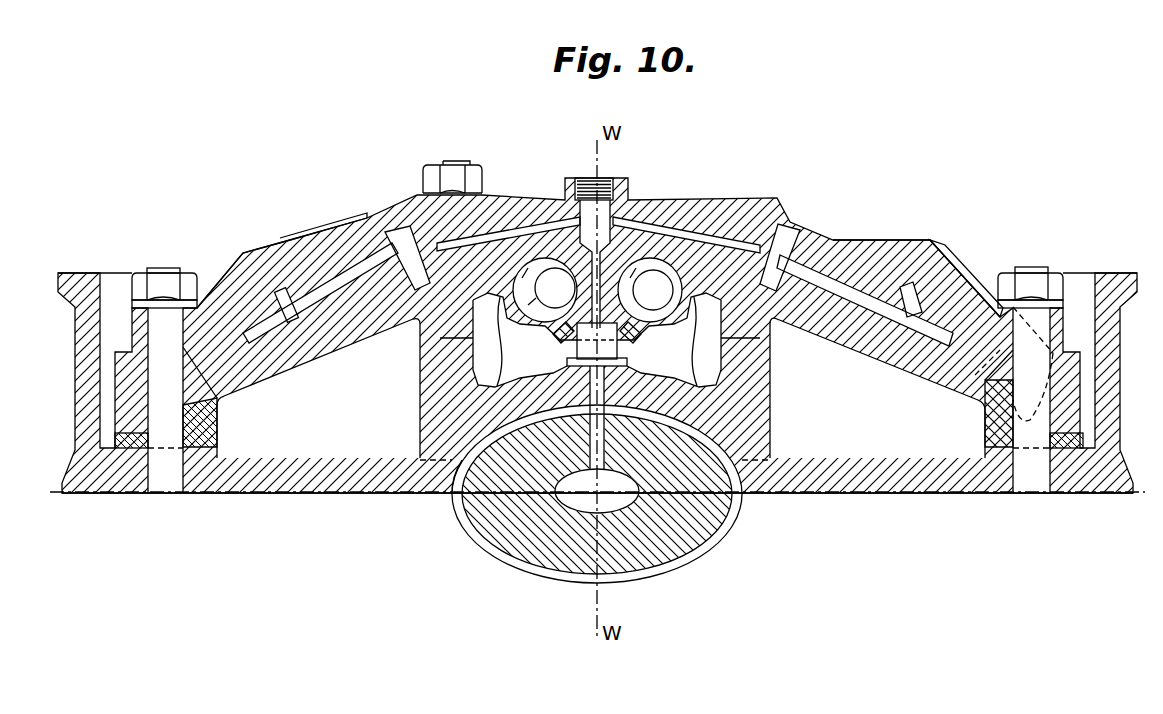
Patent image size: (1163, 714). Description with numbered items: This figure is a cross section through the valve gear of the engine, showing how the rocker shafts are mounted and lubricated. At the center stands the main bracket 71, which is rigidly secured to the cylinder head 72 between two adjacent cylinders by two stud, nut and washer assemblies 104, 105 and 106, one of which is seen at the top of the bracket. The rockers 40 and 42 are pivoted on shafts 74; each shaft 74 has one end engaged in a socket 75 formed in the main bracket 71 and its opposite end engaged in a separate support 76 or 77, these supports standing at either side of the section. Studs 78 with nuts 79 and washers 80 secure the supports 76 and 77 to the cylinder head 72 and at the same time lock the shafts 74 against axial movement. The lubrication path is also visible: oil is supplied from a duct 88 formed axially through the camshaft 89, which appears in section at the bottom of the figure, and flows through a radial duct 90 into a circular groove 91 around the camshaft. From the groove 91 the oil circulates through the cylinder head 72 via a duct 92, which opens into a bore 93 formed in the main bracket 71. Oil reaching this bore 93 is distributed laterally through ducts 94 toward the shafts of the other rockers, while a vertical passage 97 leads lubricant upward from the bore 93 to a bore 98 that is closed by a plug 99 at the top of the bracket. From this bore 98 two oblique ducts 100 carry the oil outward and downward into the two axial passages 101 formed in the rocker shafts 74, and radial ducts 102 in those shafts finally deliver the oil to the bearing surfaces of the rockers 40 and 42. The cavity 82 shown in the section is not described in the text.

The rocker 40 is at (325, 225).
The rocker 42 is at (977, 263).
The main bracket 71 is at (680, 200).
The cylinder head 72 is at (315, 478).
The shaft 74 is at (882, 287).
The socket 75 is at (818, 237).
The separate support 76 is at (998, 430).
The separate support 77 is at (140, 332).
The stud 78 is at (1040, 272).
The nut 79 is at (1040, 270).
The washer 80 is at (1055, 300).
The cavity 82 is at (722, 348).
The duct 88 is at (567, 503).
The camshaft 89 is at (577, 567).
The radial duct 90 is at (603, 452).
The circular groove 91 is at (457, 488).
The duct 92 is at (590, 394).
The bore 93 is at (620, 349).
The duct 94 is at (560, 337).
The vertical passage 97 is at (625, 288).
The bore 98 is at (612, 212).
The plug 99 is at (602, 182).
The oblique duct 100 is at (728, 246).
The axial passage 101 is at (848, 292).
The radial duct 102 is at (935, 265).
The stud, nut and washer assembly 104 is at (462, 172).
The stud, nut and washer assembly 105 is at (482, 173).
The stud, nut and washer assembly 106 is at (428, 190).